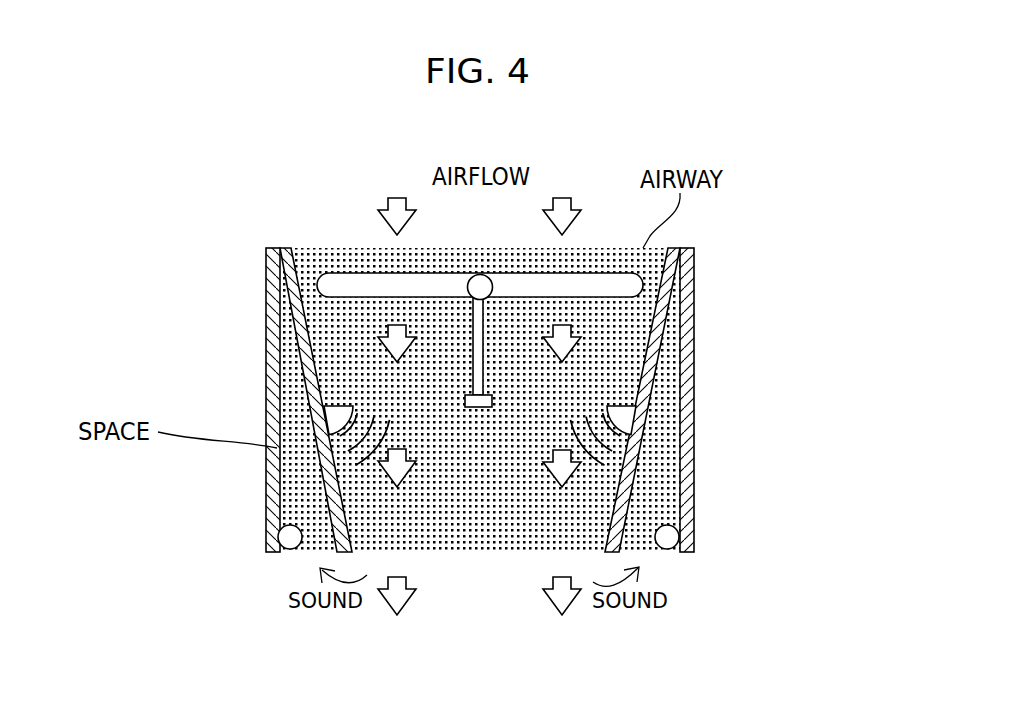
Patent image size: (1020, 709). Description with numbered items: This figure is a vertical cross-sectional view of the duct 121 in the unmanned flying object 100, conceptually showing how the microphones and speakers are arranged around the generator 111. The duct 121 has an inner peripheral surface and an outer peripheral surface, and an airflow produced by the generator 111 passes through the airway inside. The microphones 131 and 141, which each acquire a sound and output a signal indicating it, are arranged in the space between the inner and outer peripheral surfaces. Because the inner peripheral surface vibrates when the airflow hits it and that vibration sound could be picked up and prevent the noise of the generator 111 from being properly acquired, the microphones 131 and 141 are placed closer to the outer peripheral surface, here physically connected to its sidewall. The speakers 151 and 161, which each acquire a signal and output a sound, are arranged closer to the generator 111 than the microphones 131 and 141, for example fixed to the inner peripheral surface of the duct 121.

The unmanned flying object 100 is at (734, 96).
The generator 111 is at (346, 273).
The duct 121 is at (272, 298).
The microphone 131 is at (288, 549).
The microphone 141 is at (667, 549).
The speaker 151 is at (324, 406).
The speaker 161 is at (637, 405).